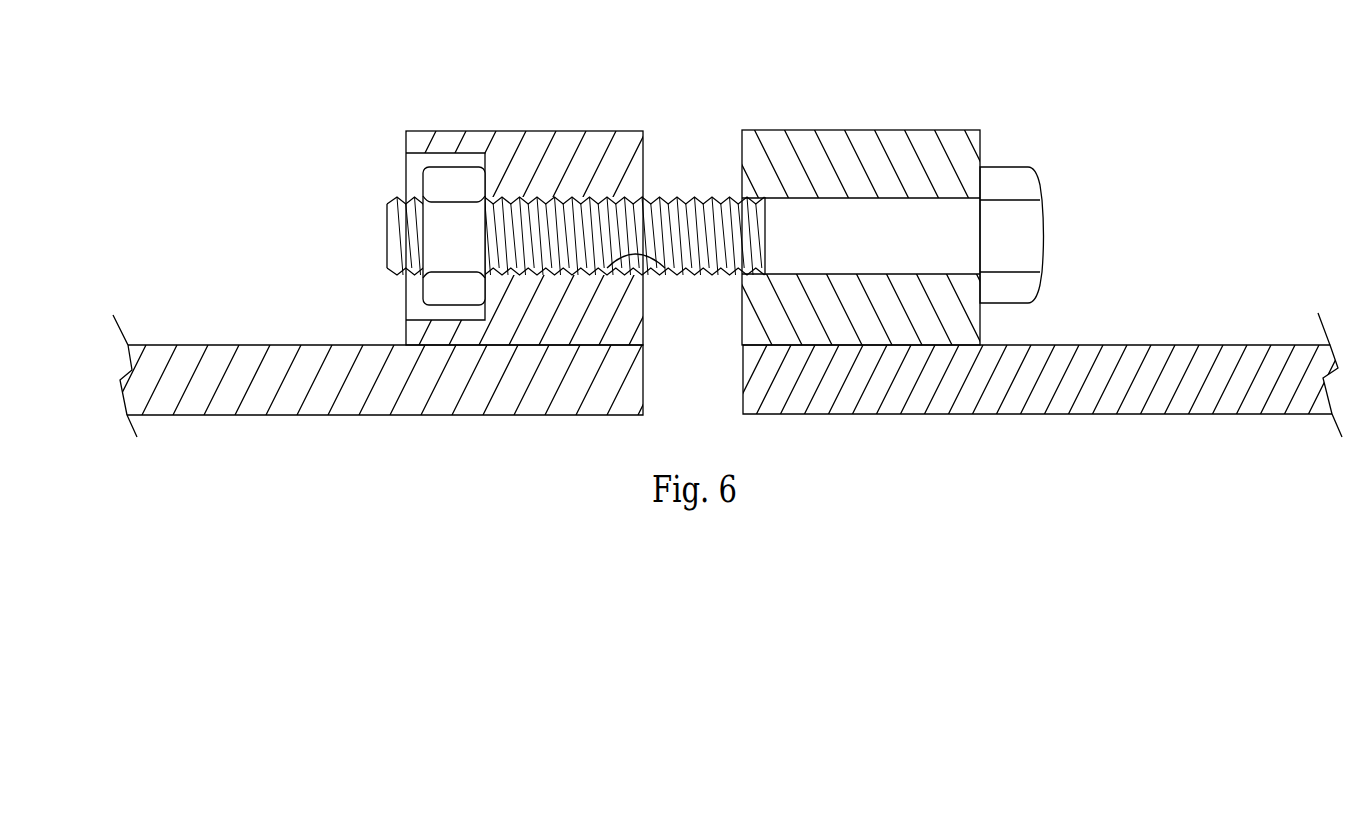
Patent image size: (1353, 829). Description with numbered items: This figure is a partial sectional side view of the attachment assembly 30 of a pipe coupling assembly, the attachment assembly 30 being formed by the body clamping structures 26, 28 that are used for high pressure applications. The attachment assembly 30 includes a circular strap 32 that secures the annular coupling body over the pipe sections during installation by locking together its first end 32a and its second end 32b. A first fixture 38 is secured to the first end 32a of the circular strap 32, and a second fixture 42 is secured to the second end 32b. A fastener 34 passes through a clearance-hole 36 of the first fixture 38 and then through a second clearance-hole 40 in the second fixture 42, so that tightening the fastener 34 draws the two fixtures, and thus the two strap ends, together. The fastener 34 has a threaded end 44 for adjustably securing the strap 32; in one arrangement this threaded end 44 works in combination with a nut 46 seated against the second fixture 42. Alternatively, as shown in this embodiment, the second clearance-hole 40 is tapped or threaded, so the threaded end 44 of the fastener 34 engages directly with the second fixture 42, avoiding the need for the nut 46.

The body clamping structure 26 is at (716, 233).
The body clamping structure 28 is at (716, 245).
The attachment assembly 30 is at (532, 222).
The circular strap 32 is at (716, 379).
The first end 32a is at (825, 414).
The second end 32b is at (418, 415).
The fastener 34 is at (1040, 239).
The clearance-hole 36 is at (862, 274).
The first fixture 38 is at (854, 221).
The second clearance-hole 40 is at (667, 274).
The second fixture 42 is at (511, 131).
The threaded end 44 is at (387, 236).
The nut 46 is at (410, 305).